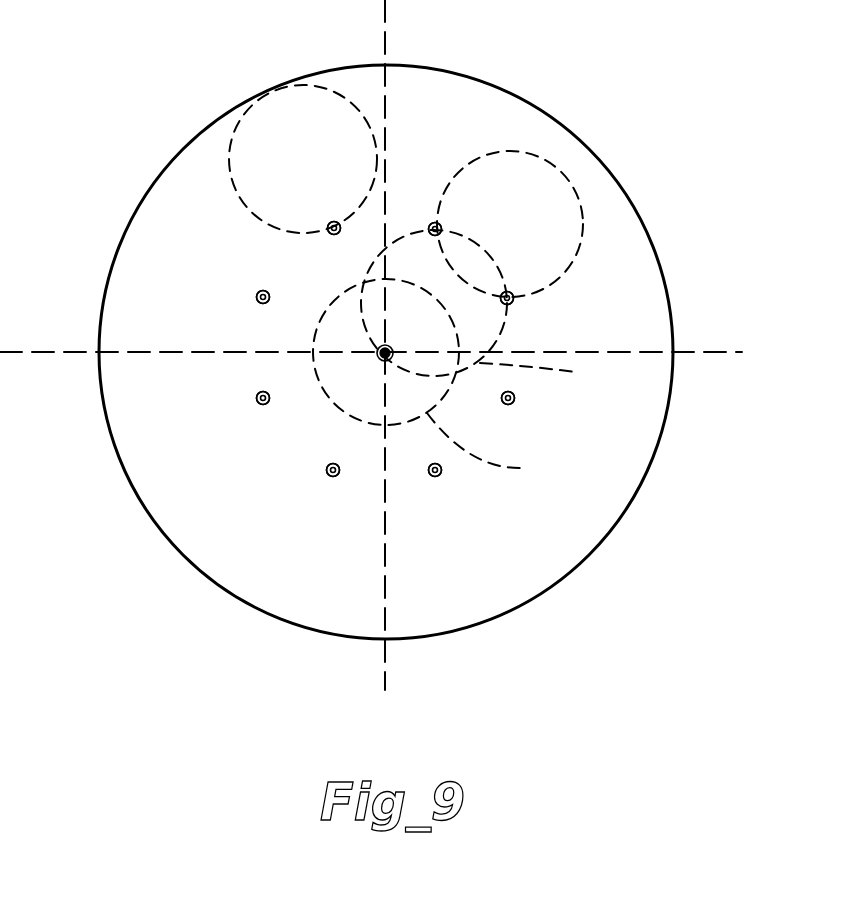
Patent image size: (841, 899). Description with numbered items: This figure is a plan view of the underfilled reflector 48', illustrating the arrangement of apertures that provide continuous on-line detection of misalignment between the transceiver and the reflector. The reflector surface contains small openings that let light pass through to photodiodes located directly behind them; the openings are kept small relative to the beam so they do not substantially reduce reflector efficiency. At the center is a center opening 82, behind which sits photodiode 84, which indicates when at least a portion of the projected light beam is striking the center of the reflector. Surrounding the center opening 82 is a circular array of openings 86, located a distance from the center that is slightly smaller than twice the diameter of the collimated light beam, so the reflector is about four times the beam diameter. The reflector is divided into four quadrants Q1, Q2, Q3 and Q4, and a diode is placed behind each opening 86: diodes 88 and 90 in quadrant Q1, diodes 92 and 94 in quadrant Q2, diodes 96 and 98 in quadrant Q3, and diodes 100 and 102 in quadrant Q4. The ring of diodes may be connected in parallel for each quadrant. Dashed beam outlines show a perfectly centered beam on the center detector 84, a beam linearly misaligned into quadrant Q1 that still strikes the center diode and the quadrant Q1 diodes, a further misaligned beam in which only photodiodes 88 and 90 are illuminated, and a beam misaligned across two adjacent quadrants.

The reflector 48' is at (425, 352).
The center opening 82 is at (383, 360).
The photodiode 84 is at (438, 330).
The openings 86 is at (334, 235).
The diode 88 is at (508, 291).
The diode 90 is at (441, 226).
The diode 92 is at (332, 221).
The diode 94 is at (261, 304).
The diode 96 is at (263, 405).
The diode 98 is at (334, 477).
The diode 100 is at (437, 477).
The diode 102 is at (515, 398).
The quadrant Q1 is at (543, 128).
The quadrant Q2 is at (226, 134).
The quadrant Q3 is at (182, 527).
The quadrant Q4 is at (593, 527).